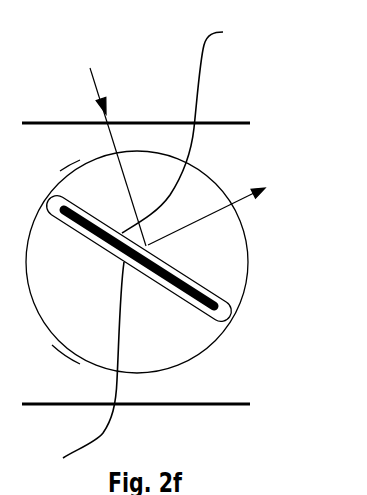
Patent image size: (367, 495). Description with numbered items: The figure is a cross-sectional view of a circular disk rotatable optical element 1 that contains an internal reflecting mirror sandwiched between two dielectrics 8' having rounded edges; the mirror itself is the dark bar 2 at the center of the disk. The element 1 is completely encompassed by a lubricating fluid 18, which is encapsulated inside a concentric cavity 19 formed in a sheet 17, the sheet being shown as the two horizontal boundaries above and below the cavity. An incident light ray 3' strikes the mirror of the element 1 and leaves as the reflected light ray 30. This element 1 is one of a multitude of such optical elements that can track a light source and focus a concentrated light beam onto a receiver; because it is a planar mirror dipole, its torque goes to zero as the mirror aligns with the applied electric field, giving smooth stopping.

The circular disk rotatable optical element 1 is at (137, 262).
The stirring element 2 is at (160, 292).
The incident light ray 3' is at (96, 149).
The dielectrics 8' is at (144, 242).
The sheet 17 is at (165, 85).
The lubricating fluid 18 is at (65, 178).
The concentric cavity 19 is at (67, 357).
The reflected light ray 30 is at (256, 190).